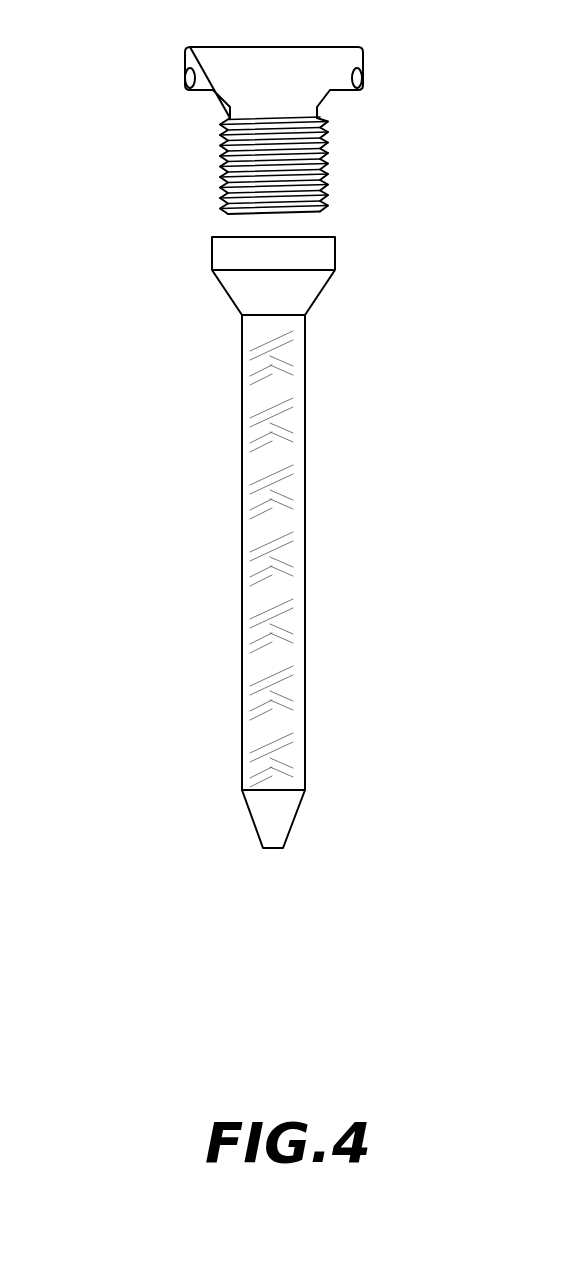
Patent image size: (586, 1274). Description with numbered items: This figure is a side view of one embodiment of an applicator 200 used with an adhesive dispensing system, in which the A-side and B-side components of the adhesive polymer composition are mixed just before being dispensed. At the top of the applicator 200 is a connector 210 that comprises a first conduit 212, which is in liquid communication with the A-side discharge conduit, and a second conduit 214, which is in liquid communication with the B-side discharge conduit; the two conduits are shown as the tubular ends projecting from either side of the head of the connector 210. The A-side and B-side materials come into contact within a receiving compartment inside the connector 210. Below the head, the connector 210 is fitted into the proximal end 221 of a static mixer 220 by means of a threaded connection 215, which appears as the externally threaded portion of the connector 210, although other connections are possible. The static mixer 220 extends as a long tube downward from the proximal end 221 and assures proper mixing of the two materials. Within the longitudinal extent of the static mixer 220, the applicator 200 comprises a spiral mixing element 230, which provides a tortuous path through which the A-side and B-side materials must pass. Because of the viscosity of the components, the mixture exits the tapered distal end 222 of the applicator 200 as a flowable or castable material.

The applicator 200 is at (91, 481).
The connector 210 is at (383, 148).
The first conduit 212 is at (360, 68).
The second conduit 214 is at (187, 68).
The threaded connection 215 is at (220, 164).
The static mixer 220 is at (318, 520).
The proximal end 221 is at (335, 252).
The distal end 222 is at (273, 850).
The spiral mixing element 230 is at (272, 410).